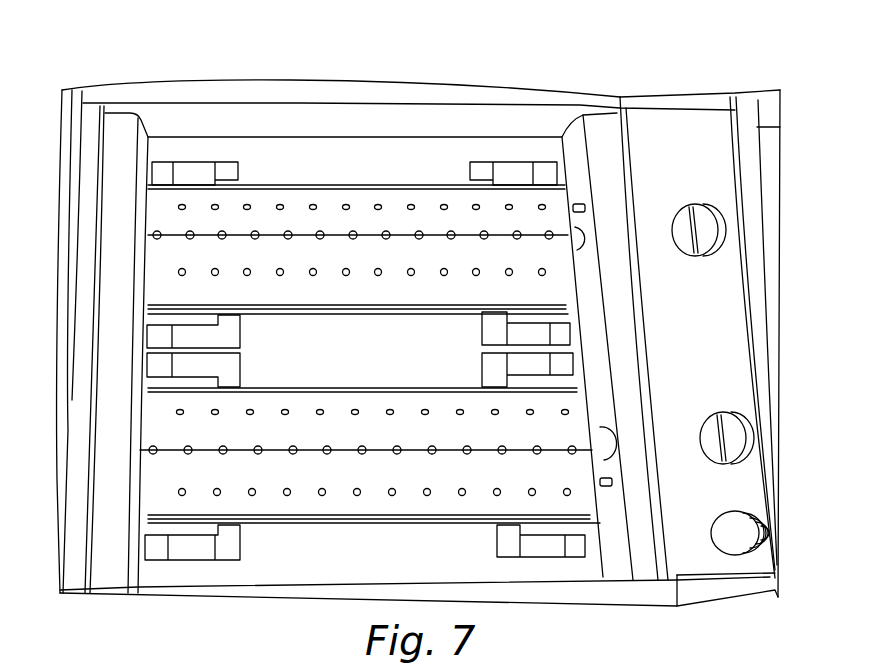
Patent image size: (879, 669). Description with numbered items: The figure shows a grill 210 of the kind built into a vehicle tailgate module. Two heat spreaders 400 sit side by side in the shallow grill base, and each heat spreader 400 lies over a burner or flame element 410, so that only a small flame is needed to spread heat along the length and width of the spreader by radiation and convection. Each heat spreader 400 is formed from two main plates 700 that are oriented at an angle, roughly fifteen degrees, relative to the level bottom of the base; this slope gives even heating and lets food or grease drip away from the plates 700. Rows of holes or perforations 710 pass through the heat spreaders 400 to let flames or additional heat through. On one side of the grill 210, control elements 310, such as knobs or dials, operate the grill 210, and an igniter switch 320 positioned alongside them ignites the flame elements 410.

The grill 210 is at (623, 73).
The control elements 310 is at (720, 230).
The igniter switch 320 is at (765, 535).
The heat spreader 400 is at (299, 306).
The flame element 410 is at (580, 237).
The main plates 700 is at (163, 217).
The perforations 710 is at (411, 268).